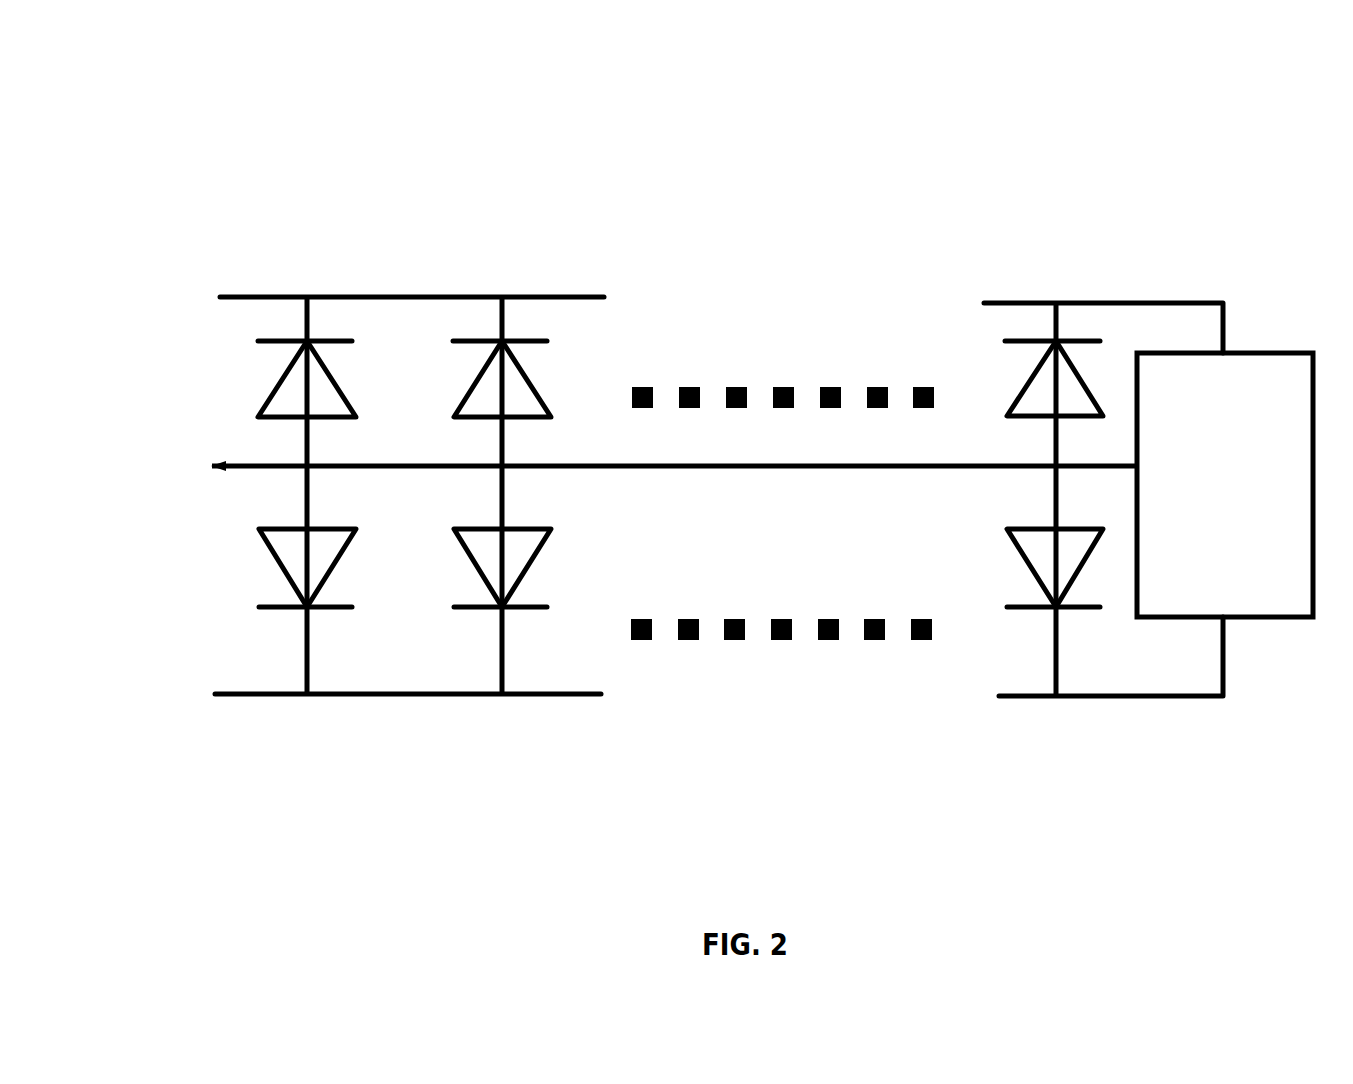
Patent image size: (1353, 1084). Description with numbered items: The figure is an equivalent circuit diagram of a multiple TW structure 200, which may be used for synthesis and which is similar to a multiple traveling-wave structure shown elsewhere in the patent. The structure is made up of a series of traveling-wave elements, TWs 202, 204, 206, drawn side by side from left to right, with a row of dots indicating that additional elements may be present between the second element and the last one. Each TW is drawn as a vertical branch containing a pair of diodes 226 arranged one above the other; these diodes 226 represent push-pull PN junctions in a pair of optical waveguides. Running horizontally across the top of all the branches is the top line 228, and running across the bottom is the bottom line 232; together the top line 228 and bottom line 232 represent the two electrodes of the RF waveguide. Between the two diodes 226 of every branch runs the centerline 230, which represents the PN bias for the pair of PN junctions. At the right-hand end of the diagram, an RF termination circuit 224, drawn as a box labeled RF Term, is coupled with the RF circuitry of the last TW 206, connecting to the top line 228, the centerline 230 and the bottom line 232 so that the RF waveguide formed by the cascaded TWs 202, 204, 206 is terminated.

The multiple TW structure 200 is at (1028, 128).
The TW 202 is at (282, 747).
The TW 204 is at (476, 753).
The TW 206 is at (1084, 748).
The RF termination circuit 224 is at (1278, 353).
The diodes 226 is at (267, 392).
The top line 228 is at (273, 298).
The centerline 230 is at (213, 465).
The bottom line 232 is at (213, 697).